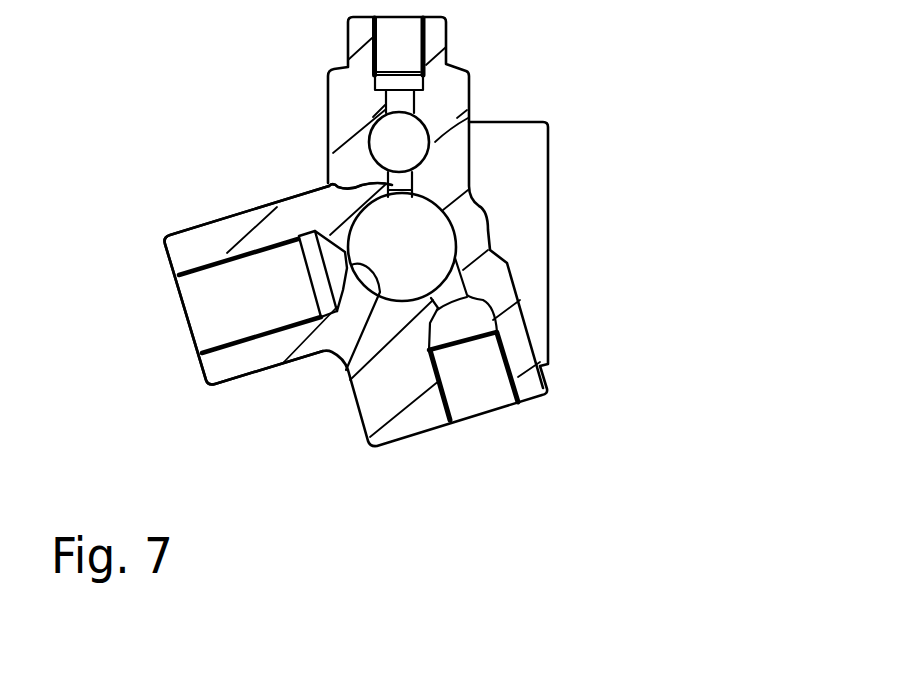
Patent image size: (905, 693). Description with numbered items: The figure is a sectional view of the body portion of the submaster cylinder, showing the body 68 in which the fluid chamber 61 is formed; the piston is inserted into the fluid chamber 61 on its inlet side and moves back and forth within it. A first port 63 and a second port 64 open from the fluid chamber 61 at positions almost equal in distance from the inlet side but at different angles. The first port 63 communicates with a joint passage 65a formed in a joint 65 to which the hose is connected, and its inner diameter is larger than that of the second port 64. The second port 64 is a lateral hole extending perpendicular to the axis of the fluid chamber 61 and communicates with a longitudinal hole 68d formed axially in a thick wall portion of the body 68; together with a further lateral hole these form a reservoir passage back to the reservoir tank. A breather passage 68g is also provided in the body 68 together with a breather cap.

The fluid chamber 61 is at (447, 236).
The first port 63 is at (344, 362).
The second port 64 is at (333, 184).
The joint 65 is at (238, 370).
The joint passage 65a is at (195, 328).
The body 68 is at (338, 110).
The longitudinal hole 68d is at (403, 143).
The breather passage 68g is at (475, 400).